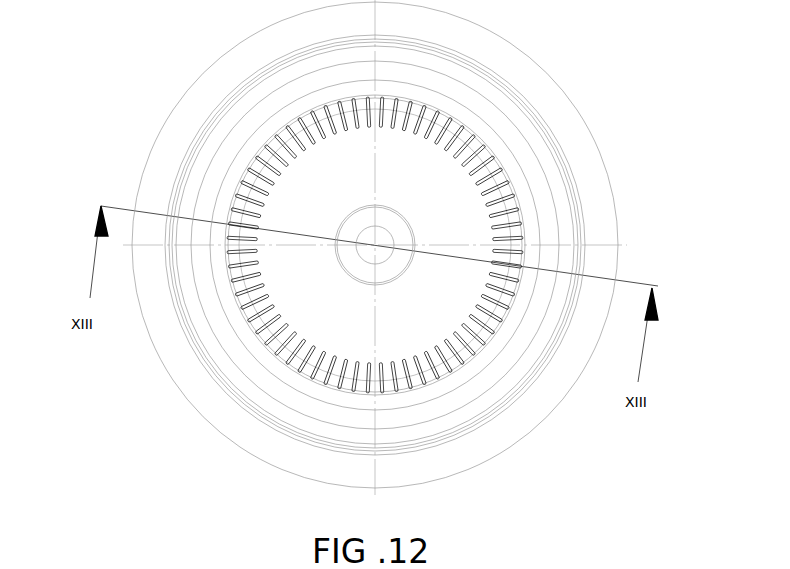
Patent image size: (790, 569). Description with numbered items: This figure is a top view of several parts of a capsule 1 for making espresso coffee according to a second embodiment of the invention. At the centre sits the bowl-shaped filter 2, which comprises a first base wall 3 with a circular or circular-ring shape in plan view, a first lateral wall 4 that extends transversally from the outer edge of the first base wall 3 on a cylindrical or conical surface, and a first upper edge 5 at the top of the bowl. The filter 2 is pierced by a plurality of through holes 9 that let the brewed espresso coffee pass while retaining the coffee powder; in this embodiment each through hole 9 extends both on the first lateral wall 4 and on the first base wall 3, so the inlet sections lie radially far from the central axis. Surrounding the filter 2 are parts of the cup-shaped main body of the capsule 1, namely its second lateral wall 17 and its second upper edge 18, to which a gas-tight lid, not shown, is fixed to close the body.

The capsule 1 is at (104, 130).
The filter 2 is at (257, 373).
The first base wall 3 is at (428, 198).
The first lateral wall 4 is at (429, 378).
The first upper edge 5 is at (485, 375).
The through holes 9 is at (248, 213).
The second lateral wall 17 is at (559, 193).
The second upper edge 18 is at (597, 222).